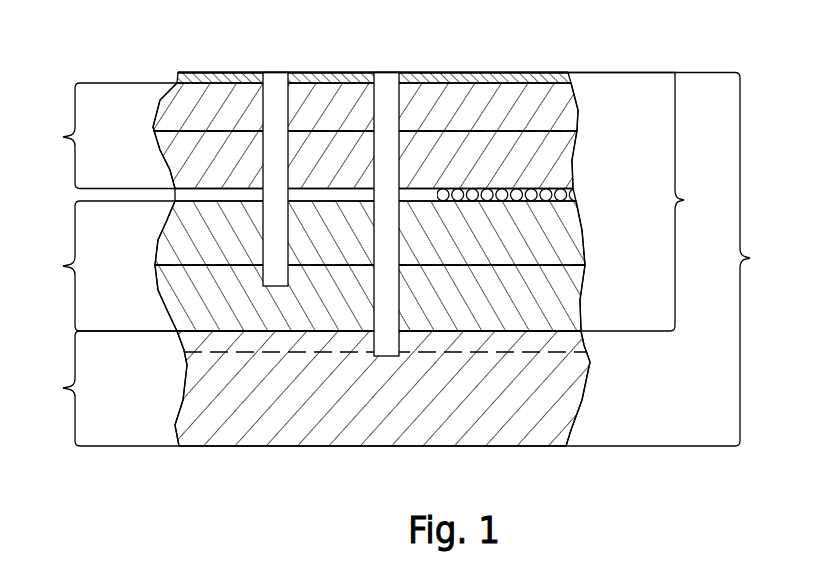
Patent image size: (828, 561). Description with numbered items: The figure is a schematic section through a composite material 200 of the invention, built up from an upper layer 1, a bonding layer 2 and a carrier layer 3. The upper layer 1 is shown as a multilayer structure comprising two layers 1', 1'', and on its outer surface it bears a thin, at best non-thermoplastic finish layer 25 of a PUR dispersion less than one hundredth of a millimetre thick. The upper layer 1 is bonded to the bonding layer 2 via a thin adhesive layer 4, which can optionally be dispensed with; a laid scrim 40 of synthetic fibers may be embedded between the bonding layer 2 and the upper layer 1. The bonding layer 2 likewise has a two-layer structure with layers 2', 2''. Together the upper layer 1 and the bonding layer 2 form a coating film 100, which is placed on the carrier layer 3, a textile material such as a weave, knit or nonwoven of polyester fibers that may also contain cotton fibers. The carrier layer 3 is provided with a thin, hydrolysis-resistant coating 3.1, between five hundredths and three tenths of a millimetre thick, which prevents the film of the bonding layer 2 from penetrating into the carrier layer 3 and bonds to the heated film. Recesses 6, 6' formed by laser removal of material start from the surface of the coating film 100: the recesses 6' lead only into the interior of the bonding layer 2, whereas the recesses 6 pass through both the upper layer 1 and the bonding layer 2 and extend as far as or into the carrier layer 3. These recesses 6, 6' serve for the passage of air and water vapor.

The upper layer 1 is at (315, 136).
The layer of the upper layer 1' is at (340, 107).
The layer of the upper layer 1'' is at (340, 160).
The bonding layer 2 is at (317, 266).
The layer of the bonding layer 2' is at (344, 233).
The layer of the bonding layer 2'' is at (344, 298).
The carrier layer 3 is at (320, 388).
The hydrolysis-resistant coating 3.1 is at (565, 340).
The adhesive layer 4 is at (561, 181).
The laid scrim 40 is at (567, 198).
The recess 6 is at (383, 184).
The recess 6' is at (267, 149).
The finish layer 25 is at (460, 83).
The coating film 100 is at (455, 202).
The composite material 200 is at (487, 260).